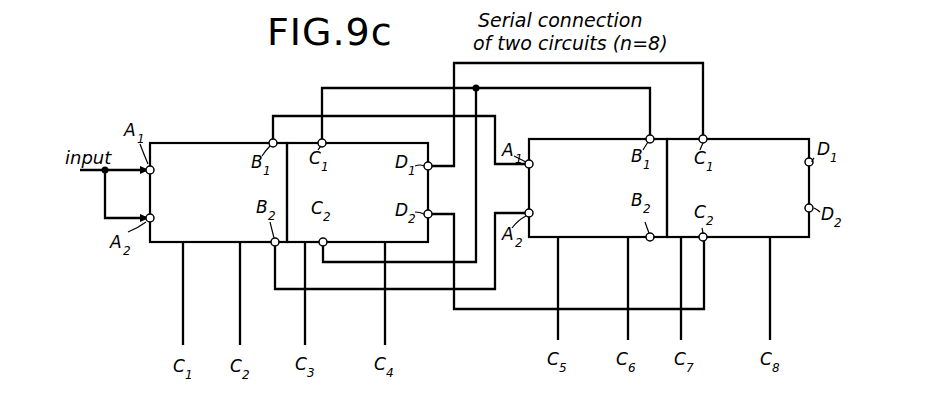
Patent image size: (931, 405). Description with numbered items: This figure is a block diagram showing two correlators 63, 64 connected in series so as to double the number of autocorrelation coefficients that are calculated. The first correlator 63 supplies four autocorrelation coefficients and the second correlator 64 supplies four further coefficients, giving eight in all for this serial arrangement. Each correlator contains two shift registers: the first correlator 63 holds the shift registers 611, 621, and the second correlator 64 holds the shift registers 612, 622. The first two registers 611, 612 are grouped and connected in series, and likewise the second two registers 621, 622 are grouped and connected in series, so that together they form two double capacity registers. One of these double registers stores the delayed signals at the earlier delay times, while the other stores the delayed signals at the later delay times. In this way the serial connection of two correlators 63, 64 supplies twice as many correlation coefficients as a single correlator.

The correlator 63 is at (205, 74).
The correlator 64 is at (789, 62).
The shift register 611 is at (193, 143).
The shift register 621 is at (375, 143).
The shift register 612 is at (578, 139).
The shift register 622 is at (740, 139).